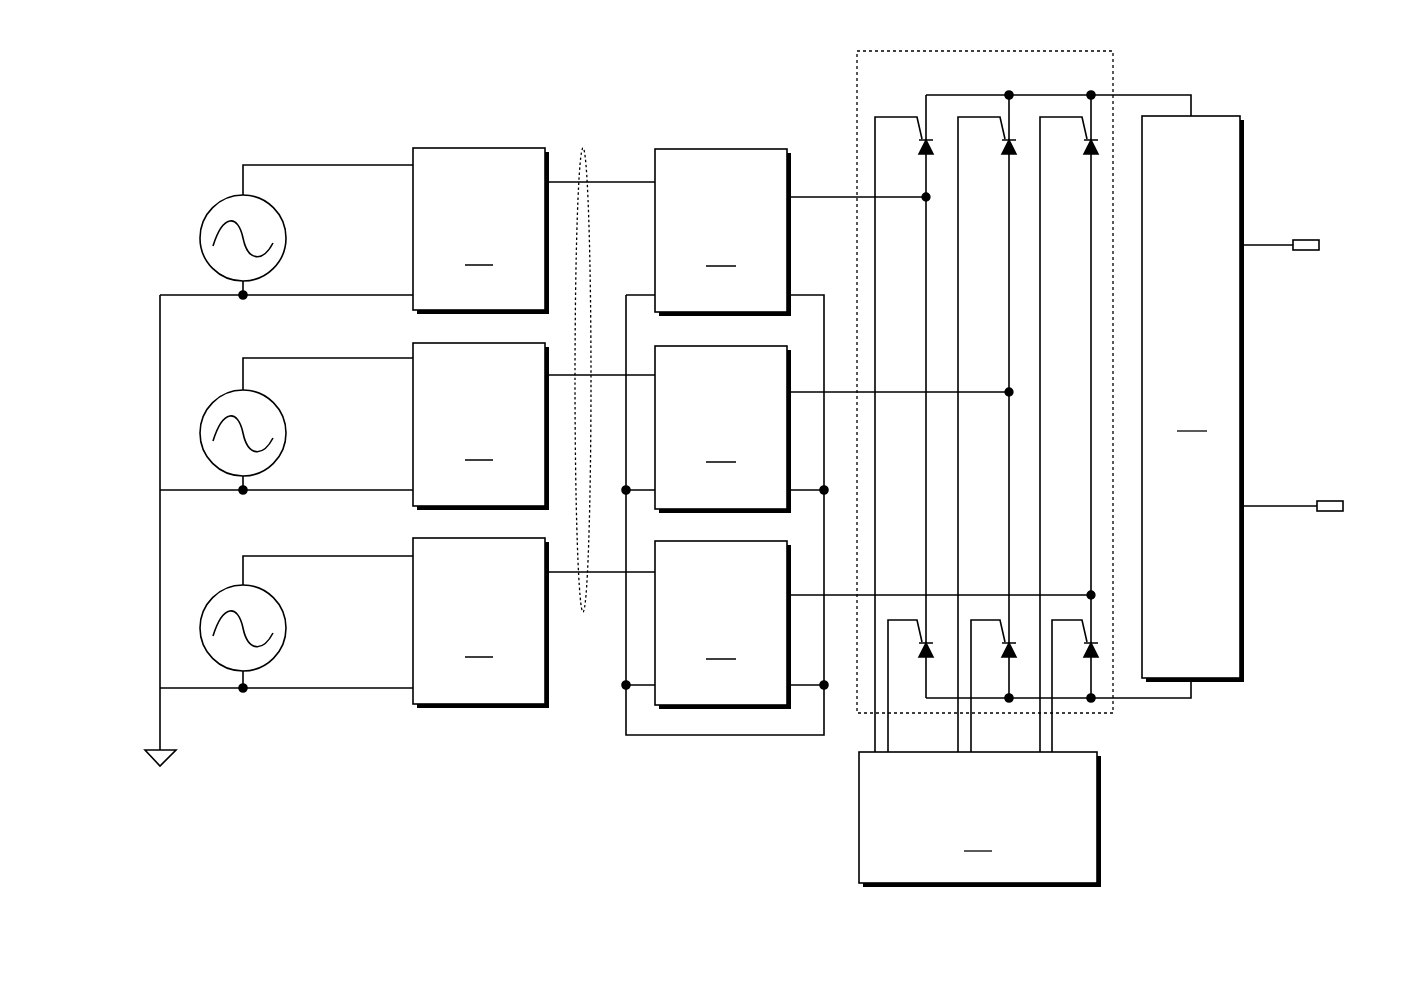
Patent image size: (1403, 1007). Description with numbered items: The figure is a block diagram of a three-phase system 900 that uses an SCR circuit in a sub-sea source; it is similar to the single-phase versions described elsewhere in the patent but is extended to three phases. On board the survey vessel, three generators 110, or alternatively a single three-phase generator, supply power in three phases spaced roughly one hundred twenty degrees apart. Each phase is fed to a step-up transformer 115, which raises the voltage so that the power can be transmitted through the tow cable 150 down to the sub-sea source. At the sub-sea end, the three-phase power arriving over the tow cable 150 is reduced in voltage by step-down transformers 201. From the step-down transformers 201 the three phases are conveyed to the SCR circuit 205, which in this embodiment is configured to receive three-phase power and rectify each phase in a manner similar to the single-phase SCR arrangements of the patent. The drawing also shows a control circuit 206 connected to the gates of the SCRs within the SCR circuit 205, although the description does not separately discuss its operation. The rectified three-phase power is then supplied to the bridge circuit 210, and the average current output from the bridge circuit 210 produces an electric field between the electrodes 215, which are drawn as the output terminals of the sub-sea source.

The system 900 is at (625, 32).
The generator 110 is at (222, 193).
The step-up transformer 115 is at (481, 428).
The tow cable 150 is at (585, 146).
The step-down transformer 201 is at (725, 442).
The SCR circuit 205 is at (992, 78).
The control circuit 206 is at (980, 819).
The bridge circuit 210 is at (1193, 399).
The electrode 215 is at (1306, 238).